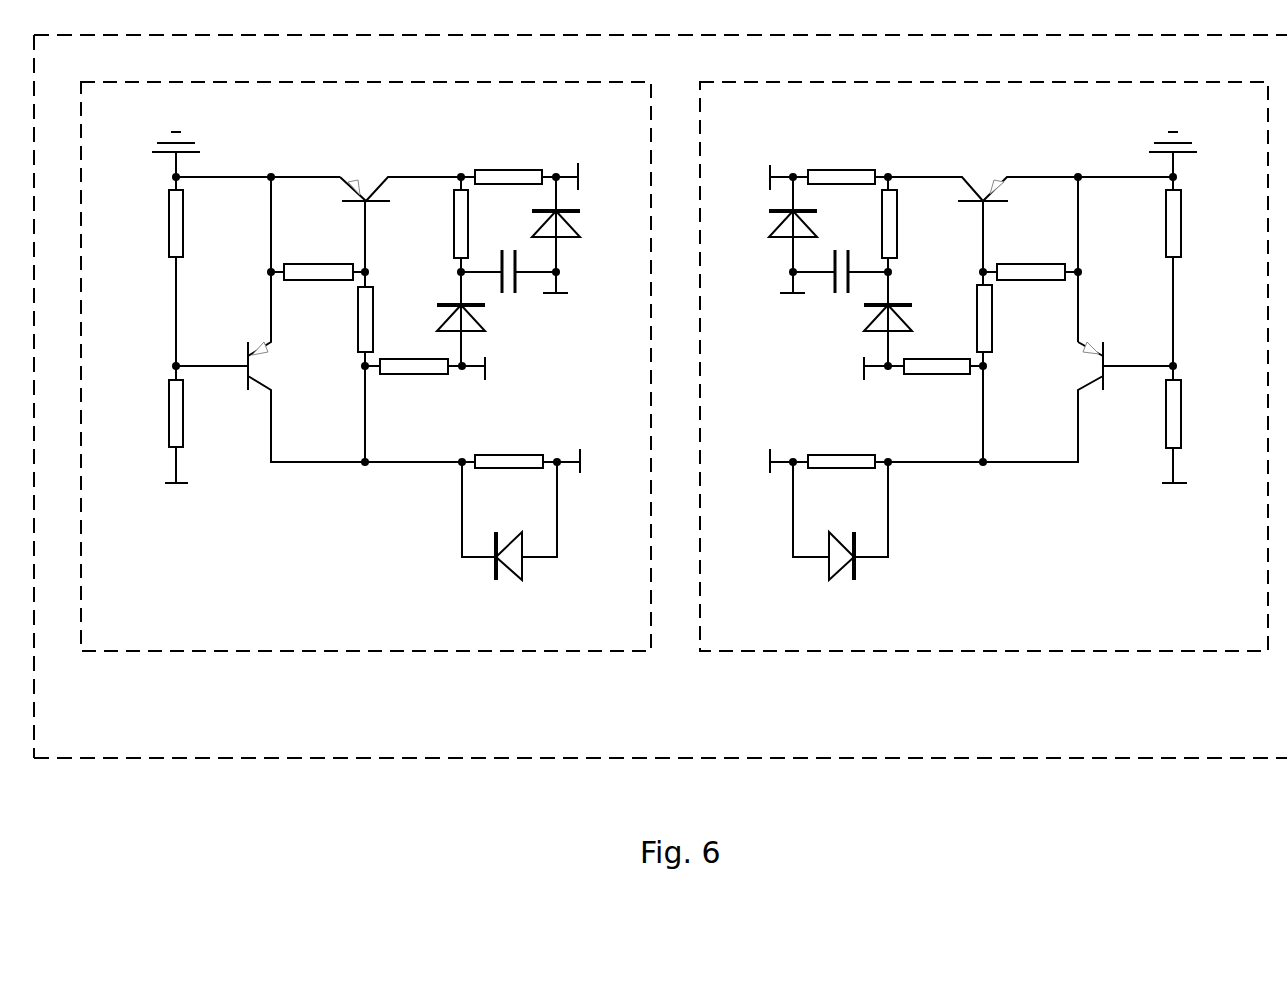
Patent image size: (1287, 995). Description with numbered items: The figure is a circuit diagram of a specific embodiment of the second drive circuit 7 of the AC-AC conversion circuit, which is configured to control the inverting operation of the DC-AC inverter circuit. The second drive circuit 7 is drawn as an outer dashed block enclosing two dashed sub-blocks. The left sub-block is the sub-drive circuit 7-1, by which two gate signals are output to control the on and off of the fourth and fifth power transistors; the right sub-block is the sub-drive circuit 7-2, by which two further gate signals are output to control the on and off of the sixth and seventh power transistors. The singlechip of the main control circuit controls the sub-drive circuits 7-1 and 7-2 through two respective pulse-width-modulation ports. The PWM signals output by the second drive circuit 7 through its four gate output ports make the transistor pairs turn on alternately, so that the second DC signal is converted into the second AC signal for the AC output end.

The second drive circuit 7 is at (660, 398).
The sub-drive circuit 7-1 is at (366, 367).
The sub-drive circuit 7-2 is at (984, 367).